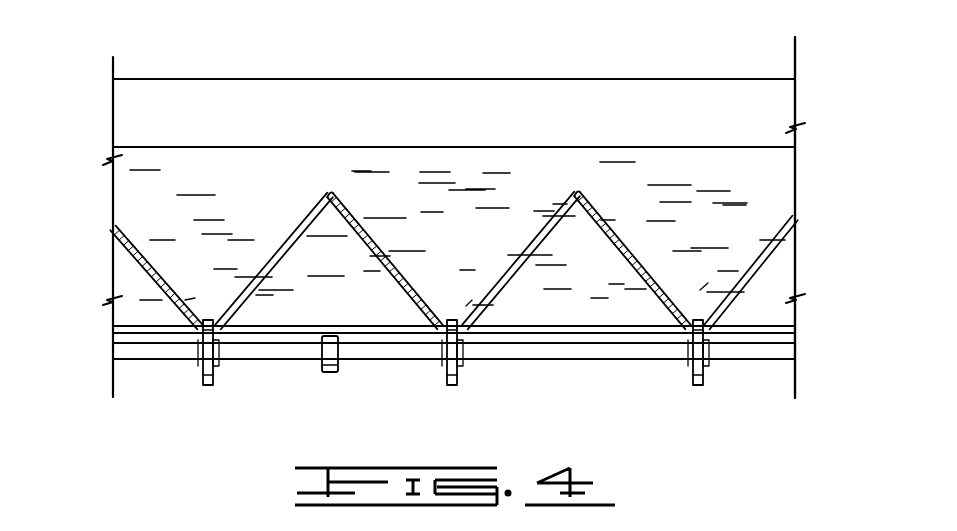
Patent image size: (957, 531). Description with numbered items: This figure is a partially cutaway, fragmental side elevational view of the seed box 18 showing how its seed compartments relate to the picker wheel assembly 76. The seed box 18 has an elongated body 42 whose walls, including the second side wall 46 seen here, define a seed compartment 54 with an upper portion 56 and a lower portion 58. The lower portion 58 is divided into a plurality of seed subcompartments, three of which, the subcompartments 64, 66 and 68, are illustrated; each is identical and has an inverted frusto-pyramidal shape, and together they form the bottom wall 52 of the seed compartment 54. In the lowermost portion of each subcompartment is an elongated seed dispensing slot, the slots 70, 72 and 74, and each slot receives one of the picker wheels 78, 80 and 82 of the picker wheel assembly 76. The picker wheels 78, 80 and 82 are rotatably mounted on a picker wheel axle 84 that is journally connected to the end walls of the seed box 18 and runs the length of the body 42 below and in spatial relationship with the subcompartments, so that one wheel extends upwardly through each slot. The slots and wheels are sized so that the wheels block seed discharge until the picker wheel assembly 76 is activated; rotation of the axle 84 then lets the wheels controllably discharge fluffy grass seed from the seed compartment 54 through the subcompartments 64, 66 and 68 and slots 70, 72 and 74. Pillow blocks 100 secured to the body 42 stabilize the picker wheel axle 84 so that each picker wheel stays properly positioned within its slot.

The seed box 18 is at (645, 70).
The elongated body 42 is at (483, 70).
The second side wall 46 is at (467, 168).
The bottom wall 52 is at (250, 300).
The seed compartment 54 is at (268, 178).
The upper portion 56 is at (748, 128).
The lower portion 58 is at (173, 272).
The seed subcompartment 64 is at (196, 298).
The seed subcompartment 66 is at (466, 306).
The seed subcompartment 68 is at (700, 290).
The seed dispensing slot 70 is at (200, 345).
The seed dispensing slot 72 is at (447, 348).
The seed dispensing slot 74 is at (697, 345).
The picker wheel assembly 76 is at (278, 362).
The picker wheel 78 is at (203, 367).
The picker wheel 80 is at (457, 383).
The picker wheel 82 is at (706, 380).
The picker wheel axle 84 is at (640, 360).
The pillow block 100 is at (332, 372).